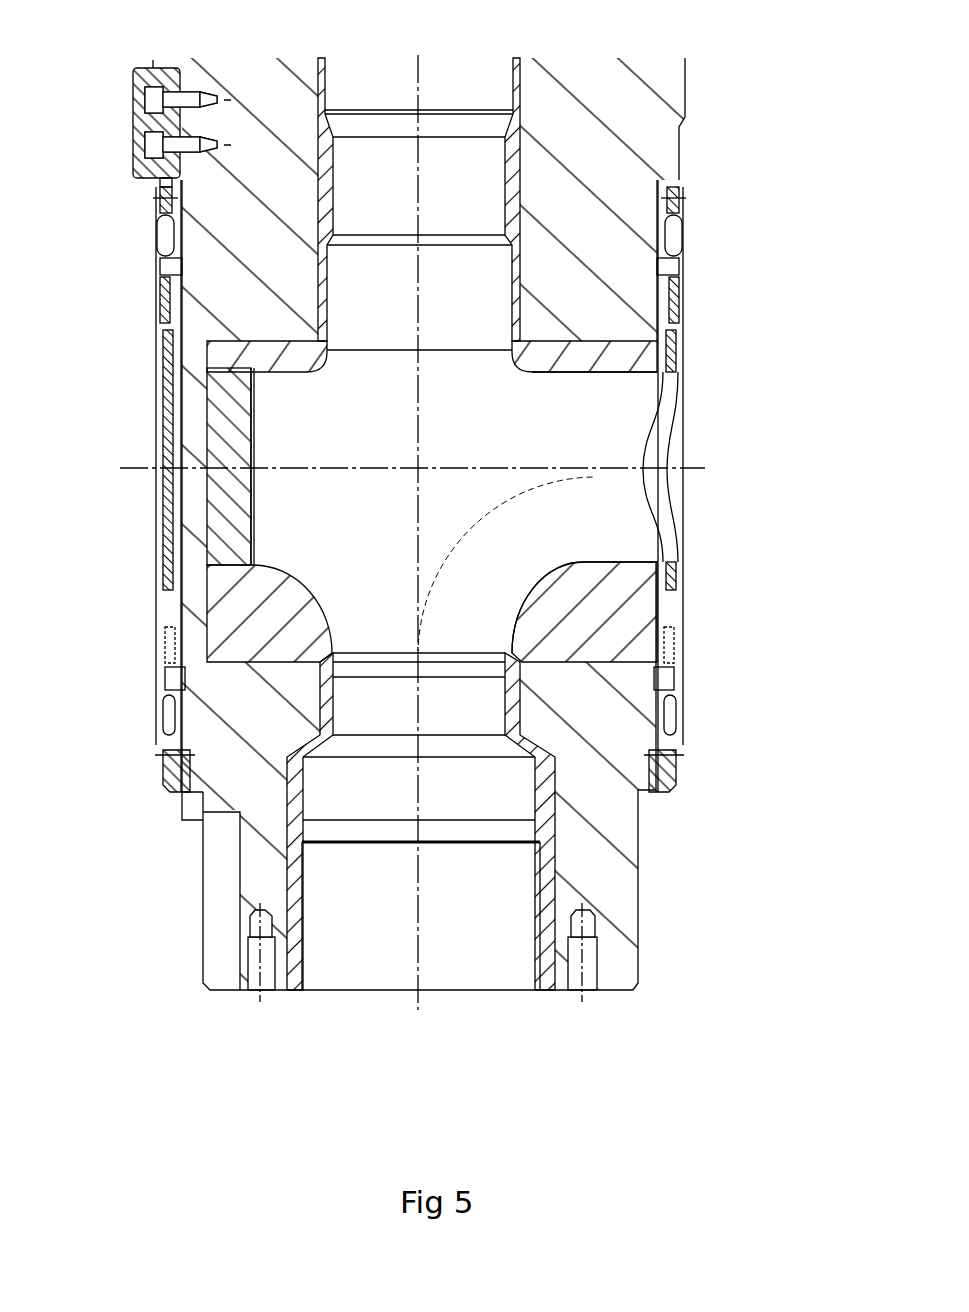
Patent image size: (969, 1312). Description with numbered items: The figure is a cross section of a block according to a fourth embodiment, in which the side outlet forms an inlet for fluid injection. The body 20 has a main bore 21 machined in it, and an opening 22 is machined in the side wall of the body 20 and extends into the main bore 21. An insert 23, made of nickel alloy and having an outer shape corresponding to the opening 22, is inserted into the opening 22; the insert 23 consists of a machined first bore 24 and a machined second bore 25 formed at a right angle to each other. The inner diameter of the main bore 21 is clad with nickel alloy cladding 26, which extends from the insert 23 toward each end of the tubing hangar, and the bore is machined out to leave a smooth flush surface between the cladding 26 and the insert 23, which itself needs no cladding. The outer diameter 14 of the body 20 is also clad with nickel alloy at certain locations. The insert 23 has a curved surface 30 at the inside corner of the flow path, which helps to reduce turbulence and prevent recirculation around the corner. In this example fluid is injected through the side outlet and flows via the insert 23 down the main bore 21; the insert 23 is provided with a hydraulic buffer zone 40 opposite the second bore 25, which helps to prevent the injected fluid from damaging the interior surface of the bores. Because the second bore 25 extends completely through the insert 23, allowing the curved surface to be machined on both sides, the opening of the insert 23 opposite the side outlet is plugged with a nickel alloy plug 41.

The outer diameter 14 is at (160, 330).
The body 20 is at (617, 837).
The main bore 21 is at (483, 897).
The opening 22 is at (587, 513).
The insert 23 is at (615, 627).
The first bore 24 is at (385, 412).
The second bore 25 is at (585, 428).
The nickel alloy cladding 26 is at (320, 88).
The curved surface 30 is at (547, 578).
The hydraulic buffer zone 40 is at (273, 442).
The nickel alloy plug 41 is at (230, 495).